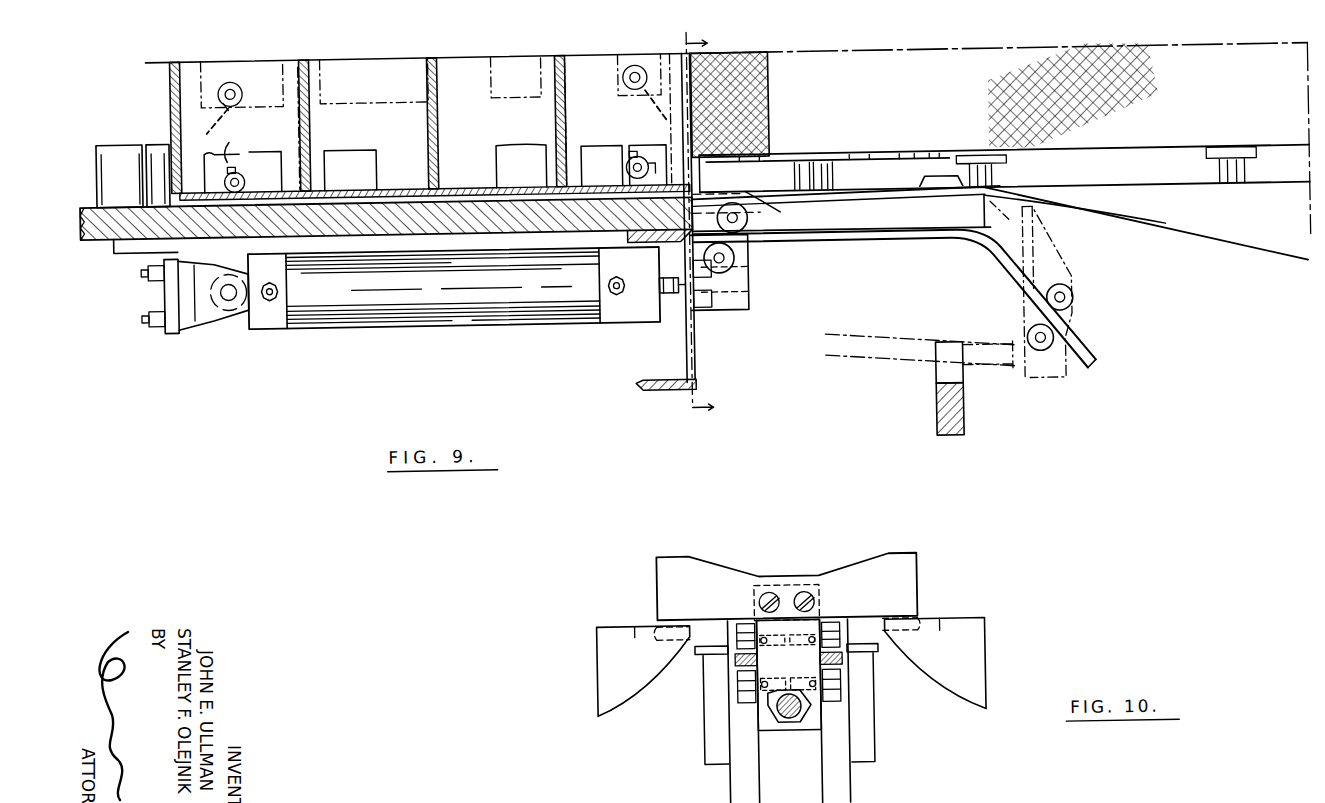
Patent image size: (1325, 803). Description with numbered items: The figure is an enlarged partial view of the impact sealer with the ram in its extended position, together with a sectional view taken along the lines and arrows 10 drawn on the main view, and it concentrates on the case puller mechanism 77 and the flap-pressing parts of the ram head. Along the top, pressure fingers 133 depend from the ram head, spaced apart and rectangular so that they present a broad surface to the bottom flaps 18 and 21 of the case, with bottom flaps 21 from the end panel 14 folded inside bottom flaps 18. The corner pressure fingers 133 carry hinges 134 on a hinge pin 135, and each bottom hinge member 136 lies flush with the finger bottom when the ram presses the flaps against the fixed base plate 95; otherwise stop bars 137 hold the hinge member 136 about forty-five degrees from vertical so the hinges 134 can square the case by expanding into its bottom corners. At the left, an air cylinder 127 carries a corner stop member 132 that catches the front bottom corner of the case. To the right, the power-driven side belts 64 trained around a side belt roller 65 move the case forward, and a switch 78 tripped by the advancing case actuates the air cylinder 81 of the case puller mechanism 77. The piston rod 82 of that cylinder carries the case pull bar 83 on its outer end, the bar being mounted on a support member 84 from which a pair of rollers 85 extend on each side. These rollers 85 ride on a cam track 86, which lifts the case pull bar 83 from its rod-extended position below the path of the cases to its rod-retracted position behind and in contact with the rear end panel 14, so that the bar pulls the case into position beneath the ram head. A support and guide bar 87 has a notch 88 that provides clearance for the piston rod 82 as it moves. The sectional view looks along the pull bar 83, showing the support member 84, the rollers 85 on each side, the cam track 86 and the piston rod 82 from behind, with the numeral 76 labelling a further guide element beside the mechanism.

In FIG. 9, the section lines and arrows 10 is at (717, 226).
In FIG. 9, the end panel 14 is at (172, 86).
In FIG. 9, the bottom flaps 18 is at (413, 192).
In FIG. 9, the bottom flaps 21 is at (360, 195).
In FIG. 9, the side belts 64 is at (915, 117).
In FIG. 9, the side belt roller 65 is at (903, 168).
In FIG. 9, the guide rail 76 is at (1225, 255).
In FIG. 10, the guide rail 76 is at (624, 688).
In FIG. 9, the case puller mechanism 77 is at (547, 350).
In FIG. 9, the switch 78 is at (950, 187).
In FIG. 9, the air cylinder 81 is at (465, 318).
In FIG. 9, the piston rod 82 is at (670, 300).
In FIG. 10, the piston rod 82 is at (797, 712).
In FIG. 9, the case pull bar 83 is at (710, 168).
In FIG. 10, the case pull bar 83 is at (853, 573).
In FIG. 9, the support member 84 is at (747, 306).
In FIG. 10, the support member 84 is at (773, 730).
In FIG. 9, the rollers 85 is at (735, 268).
In FIG. 10, the rollers 85 is at (748, 630).
In FIG. 9, the cam track 86 is at (922, 242).
In FIG. 10, the cam track 86 is at (740, 661).
In FIG. 9, the support and guide bar 87 is at (962, 412).
In FIG. 9, the notch 88 is at (940, 375).
In FIG. 9, the base plate 95 is at (98, 240).
In FIG. 9, the air cylinder 127 is at (128, 150).
In FIG. 9, the corner stop member 132 is at (170, 146).
In FIG. 9, the pressure fingers 133 is at (283, 92).
In FIG. 9, the hinges 134 is at (230, 138).
In FIG. 9, the hinge pin 135 is at (245, 178).
In FIG. 9, the bottom hinge member 136 is at (203, 196).
In FIG. 9, the stop bars 137 is at (232, 165).